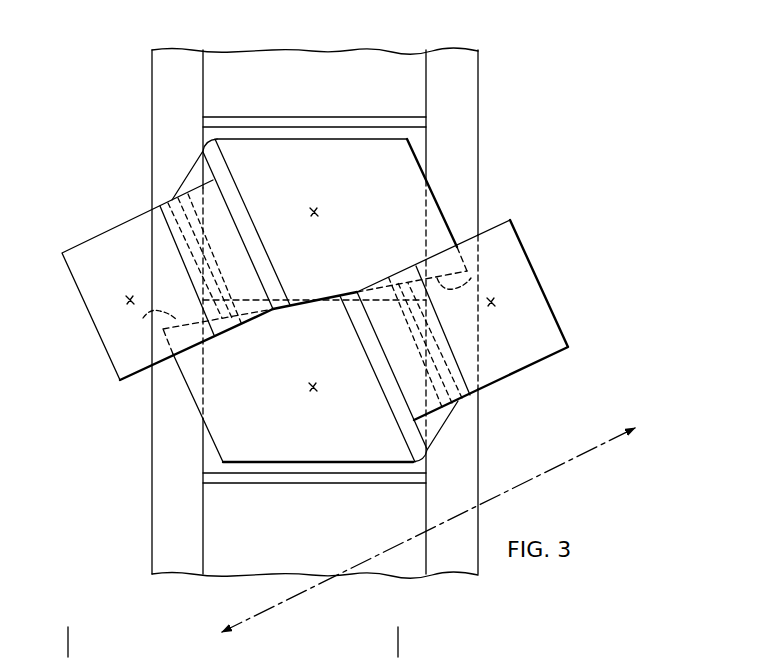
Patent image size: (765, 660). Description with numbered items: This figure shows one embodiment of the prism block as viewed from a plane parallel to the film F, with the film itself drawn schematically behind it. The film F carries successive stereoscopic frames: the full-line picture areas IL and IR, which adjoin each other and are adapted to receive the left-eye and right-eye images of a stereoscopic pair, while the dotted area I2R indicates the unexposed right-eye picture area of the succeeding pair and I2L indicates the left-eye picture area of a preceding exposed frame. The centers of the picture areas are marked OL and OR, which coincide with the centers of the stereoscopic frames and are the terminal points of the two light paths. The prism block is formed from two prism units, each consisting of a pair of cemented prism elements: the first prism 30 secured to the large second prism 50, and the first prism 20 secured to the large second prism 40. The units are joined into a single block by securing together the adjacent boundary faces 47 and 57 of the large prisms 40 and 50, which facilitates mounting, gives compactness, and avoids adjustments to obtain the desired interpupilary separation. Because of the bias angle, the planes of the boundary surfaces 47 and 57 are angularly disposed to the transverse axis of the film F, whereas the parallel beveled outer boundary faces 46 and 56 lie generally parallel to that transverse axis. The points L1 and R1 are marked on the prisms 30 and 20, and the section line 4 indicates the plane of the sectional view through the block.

The film F is at (150, 97).
The unexposed right-eye picture area I2R is at (386, 53).
The left-eye picture area IL is at (427, 135).
The right-eye picture area IR is at (211, 450).
The exposed left-eye picture area I2L is at (218, 525).
The first prism 20 is at (542, 287).
The first prism 30 is at (85, 309).
The second prism 40 is at (185, 383).
The outer boundary face 46 is at (264, 462).
The boundary face 47 is at (143, 318).
The second prism 50 is at (441, 199).
The outer boundary face 56 is at (298, 140).
The boundary face 57 is at (473, 277).
The left frame center OL is at (320, 211).
The right frame center OR is at (311, 392).
The left reference point L1 is at (133, 291).
The right reference point R1 is at (494, 310).
The section line 4 is at (417, 512).